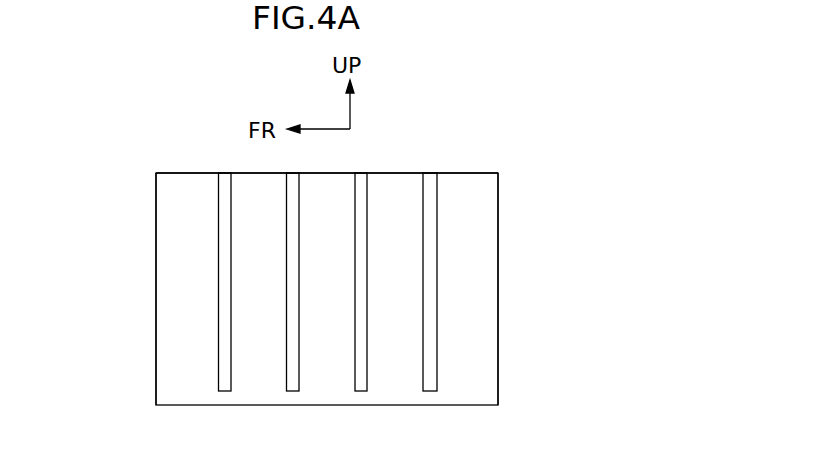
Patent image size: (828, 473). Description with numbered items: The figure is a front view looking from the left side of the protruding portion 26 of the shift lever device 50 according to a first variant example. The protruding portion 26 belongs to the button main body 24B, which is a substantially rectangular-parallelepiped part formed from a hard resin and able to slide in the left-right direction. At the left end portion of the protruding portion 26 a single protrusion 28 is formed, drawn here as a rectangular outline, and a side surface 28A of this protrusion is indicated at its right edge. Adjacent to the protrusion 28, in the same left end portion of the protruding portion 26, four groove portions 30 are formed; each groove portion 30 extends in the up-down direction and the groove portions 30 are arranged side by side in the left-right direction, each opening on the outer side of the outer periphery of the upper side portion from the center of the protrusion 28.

The shift lever device 50 is at (115, 178).
The protrusion 28 is at (172, 234).
The side surface of base portion 28A is at (488, 232).
The protruding portion 26 is at (498, 173).
The button main body 24B is at (533, 288).
The groove portions 30 is at (222, 276).